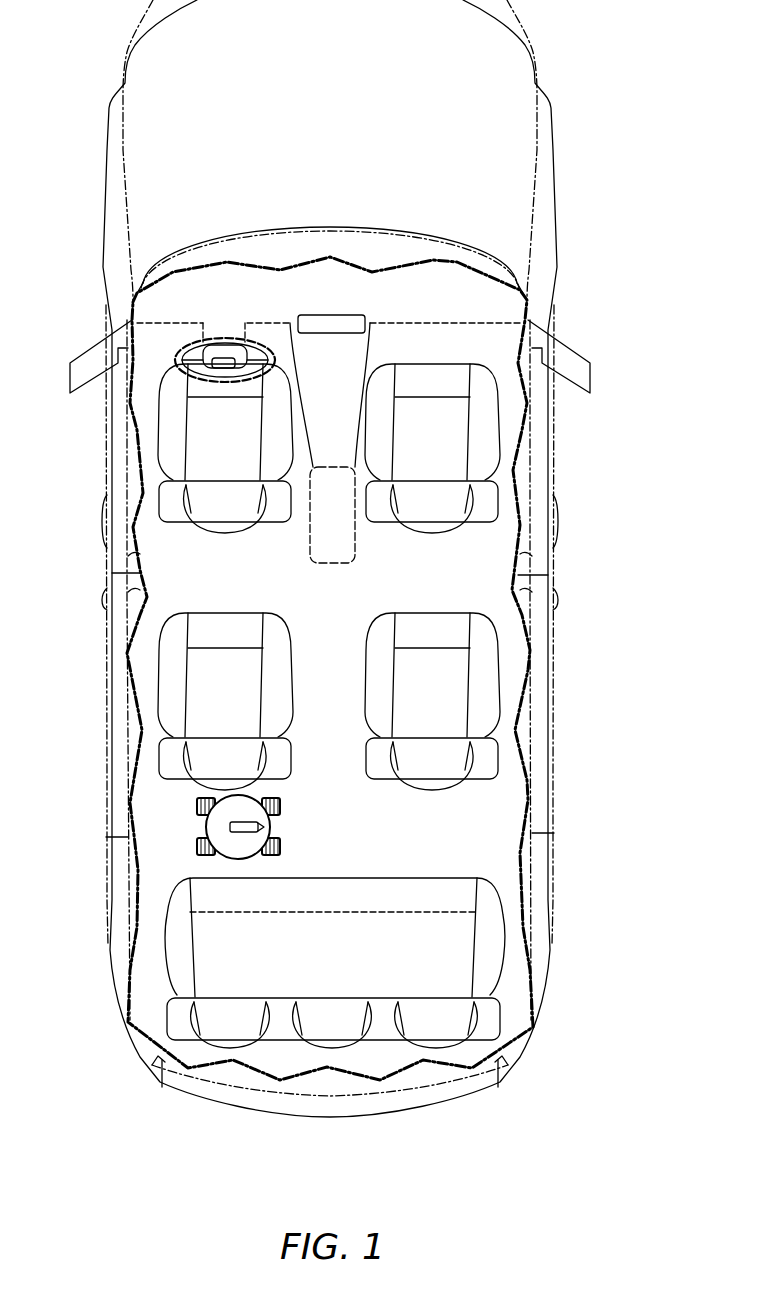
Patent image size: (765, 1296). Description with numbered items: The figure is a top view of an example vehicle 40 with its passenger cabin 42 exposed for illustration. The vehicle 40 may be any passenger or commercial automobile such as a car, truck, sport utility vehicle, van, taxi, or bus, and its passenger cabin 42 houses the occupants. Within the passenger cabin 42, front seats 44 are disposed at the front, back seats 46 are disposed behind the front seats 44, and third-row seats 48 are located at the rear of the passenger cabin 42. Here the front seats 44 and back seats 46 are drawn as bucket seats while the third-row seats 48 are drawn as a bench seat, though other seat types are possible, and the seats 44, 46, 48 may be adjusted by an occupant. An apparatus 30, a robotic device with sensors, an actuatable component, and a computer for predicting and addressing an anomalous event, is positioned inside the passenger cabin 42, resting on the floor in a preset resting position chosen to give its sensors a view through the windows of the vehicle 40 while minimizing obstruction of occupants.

The vehicle 40 is at (562, 172).
The passenger cabin 42 is at (463, 557).
The front seats 44 is at (270, 420).
The back seats 46 is at (272, 668).
The third-row seats 48 is at (363, 927).
The apparatus 30 is at (201, 827).